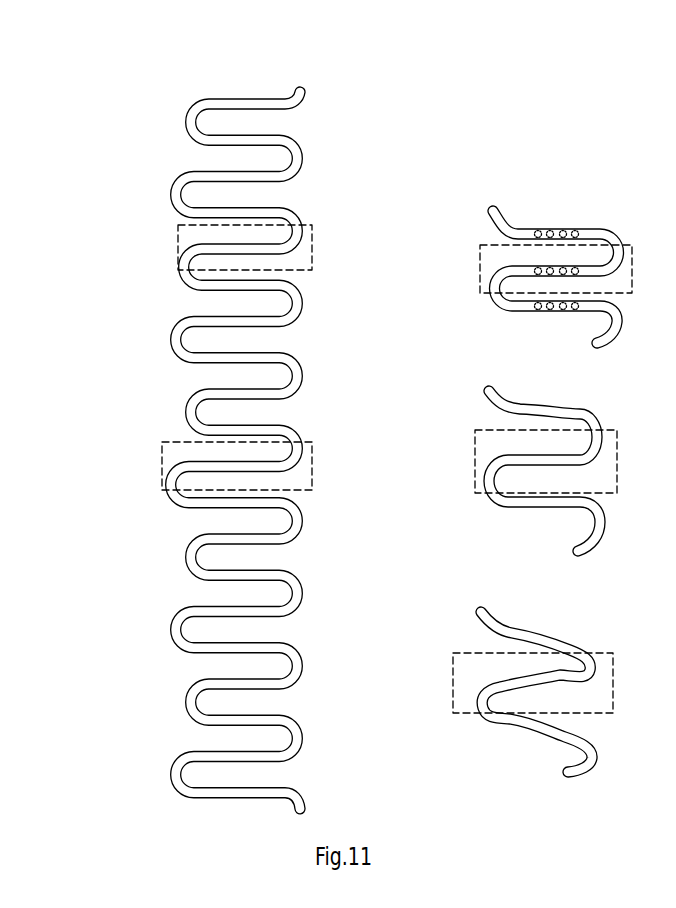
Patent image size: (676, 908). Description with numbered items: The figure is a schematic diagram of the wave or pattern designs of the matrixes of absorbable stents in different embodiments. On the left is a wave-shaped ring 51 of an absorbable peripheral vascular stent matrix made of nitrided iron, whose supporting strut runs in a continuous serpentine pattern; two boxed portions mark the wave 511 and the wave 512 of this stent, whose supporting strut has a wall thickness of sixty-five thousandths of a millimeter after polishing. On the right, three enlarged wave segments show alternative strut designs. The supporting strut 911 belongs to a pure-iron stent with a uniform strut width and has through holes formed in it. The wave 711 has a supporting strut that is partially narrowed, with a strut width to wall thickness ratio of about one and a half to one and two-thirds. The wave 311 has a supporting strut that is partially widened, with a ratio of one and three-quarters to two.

The wave-shaped ring 51 is at (188, 118).
The wave 511 is at (185, 240).
The wave 512 is at (173, 468).
The supporting strut 911 is at (513, 252).
The wave 711 is at (532, 437).
The wave 311 is at (523, 658).